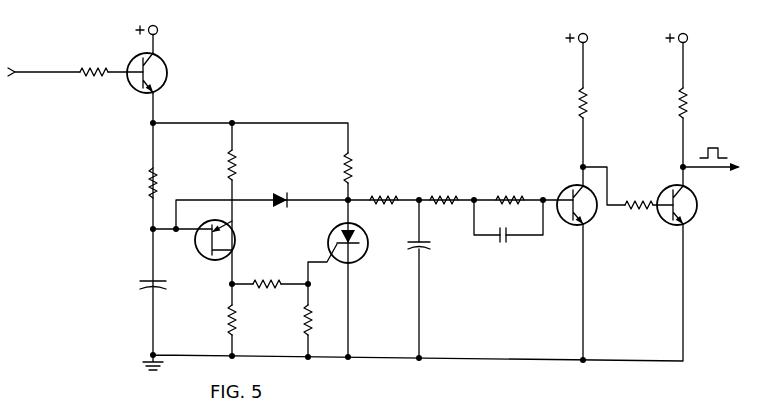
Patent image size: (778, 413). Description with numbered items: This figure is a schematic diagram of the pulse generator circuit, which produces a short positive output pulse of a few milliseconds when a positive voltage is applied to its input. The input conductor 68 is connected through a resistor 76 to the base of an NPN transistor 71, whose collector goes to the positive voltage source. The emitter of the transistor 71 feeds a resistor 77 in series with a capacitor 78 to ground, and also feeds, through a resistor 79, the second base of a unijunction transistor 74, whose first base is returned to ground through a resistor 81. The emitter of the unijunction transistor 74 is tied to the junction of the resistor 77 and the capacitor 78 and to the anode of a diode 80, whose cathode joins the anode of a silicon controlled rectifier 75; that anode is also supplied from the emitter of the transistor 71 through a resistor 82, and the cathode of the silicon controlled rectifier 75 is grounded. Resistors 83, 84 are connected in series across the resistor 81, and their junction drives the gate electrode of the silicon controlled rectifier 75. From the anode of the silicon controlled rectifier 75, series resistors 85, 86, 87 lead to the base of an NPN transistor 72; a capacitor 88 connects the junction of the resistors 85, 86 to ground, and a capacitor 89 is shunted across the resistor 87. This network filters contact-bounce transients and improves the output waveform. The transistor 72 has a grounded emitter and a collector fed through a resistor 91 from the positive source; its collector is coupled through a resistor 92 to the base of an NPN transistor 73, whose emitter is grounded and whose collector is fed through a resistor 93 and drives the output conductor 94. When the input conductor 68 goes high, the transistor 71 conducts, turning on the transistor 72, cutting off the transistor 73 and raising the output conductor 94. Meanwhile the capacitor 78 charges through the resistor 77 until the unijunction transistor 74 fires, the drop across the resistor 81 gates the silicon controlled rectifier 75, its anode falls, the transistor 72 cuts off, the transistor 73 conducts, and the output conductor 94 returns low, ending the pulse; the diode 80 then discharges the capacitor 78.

The input conductor 68 is at (45, 72).
The NPN transistor 71 is at (166, 62).
The NPN transistor 72 is at (591, 218).
The NPN transistor 73 is at (691, 218).
The unijunction transistor 74 is at (234, 231).
The silicon controlled rectifier 75 is at (363, 253).
The resistor 76 is at (90, 77).
The resistor 77 is at (148, 181).
The capacitor 78 is at (138, 286).
The resistor 79 is at (243, 154).
The diode 80 is at (280, 193).
The resistor 81 is at (226, 323).
The resistor 82 is at (352, 168).
The resistor 83 is at (266, 287).
The resistor 84 is at (305, 326).
The resistor 85 is at (381, 200).
The resistor 86 is at (442, 200).
The resistor 87 is at (507, 200).
The capacitor 88 is at (432, 249).
The capacitor 89 is at (503, 246).
The resistor 91 is at (589, 104).
The resistor 92 is at (648, 201).
The resistor 93 is at (689, 104).
The output conductor 94 is at (708, 168).